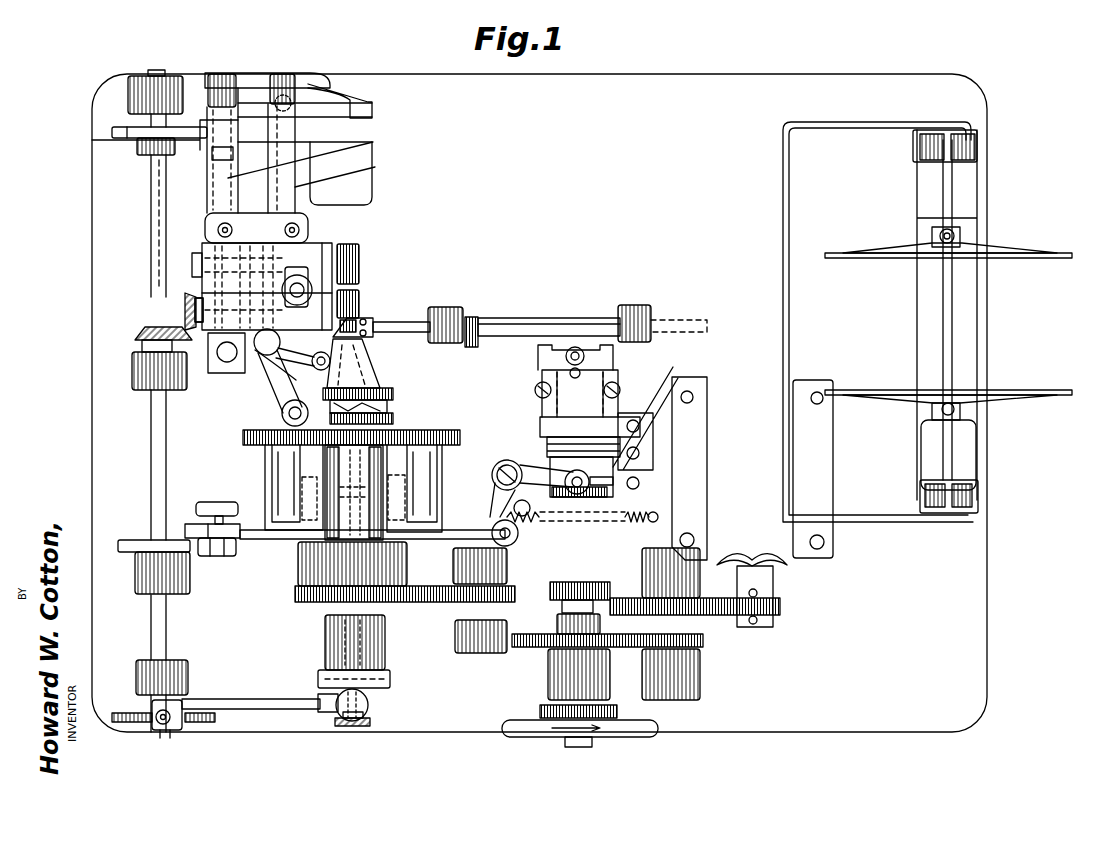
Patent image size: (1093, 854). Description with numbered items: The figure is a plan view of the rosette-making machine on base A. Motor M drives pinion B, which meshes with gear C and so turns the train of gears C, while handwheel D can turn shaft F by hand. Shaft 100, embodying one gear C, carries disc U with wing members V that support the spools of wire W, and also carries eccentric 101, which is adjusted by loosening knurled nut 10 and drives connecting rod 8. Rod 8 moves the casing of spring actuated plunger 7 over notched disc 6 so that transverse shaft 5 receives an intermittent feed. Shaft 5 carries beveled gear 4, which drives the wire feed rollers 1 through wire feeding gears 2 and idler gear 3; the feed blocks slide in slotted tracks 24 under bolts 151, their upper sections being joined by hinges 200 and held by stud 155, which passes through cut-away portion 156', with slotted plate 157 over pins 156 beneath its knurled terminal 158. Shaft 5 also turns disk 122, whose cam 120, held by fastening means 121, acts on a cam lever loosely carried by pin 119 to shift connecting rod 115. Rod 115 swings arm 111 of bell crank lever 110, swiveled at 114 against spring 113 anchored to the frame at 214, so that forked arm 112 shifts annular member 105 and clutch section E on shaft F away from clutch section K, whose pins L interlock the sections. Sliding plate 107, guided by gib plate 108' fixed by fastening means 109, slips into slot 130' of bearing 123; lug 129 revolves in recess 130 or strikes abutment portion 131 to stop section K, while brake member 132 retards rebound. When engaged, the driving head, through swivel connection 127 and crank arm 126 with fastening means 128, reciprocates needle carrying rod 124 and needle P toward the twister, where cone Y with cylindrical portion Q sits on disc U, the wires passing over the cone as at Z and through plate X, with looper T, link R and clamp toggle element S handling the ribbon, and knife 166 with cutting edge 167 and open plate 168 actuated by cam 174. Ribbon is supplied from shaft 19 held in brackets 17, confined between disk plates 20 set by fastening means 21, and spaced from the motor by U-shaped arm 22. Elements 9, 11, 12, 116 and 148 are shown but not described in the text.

The wire feed roller 1 is at (375, 250).
The wire feeding gear 2 is at (868, 772).
The intermediate idler gear 3 is at (62, 93).
The beveled gear 4 is at (183, 300).
The transverse shaft 5 is at (150, 464).
The notched disc 6 is at (125, 713).
The spring actuated plunger 7 is at (180, 730).
The connecting rod 8 is at (256, 702).
The plate 9 is at (392, 679).
The knurled nut 10 is at (372, 723).
The passage 11 is at (322, 678).
The housing 12 is at (372, 150).
The vertical bracket 17 is at (975, 132).
The supply shaft 19 is at (955, 322).
The disk plate 20 is at (1060, 260).
The detachable fastening means 21 is at (960, 236).
The U-shaped arm 22 is at (782, 214).
The slotted track 24 is at (372, 118).
The shaft 100 is at (370, 632).
The eccentric 101 is at (370, 705).
The annular member 105 is at (680, 405).
The slidable plate 107 is at (690, 420).
The gib plate 108' is at (746, 469).
The fastening means 109 is at (622, 456).
The bell crank lever 110 is at (490, 484).
The bell crank arm 111 is at (498, 506).
The forked bell crank arm 112 is at (560, 470).
The yielding resistance spring 113 is at (644, 521).
The swivel 114 is at (545, 452).
The connecting rod 115 is at (448, 540).
The drum 116 is at (320, 560).
The pin 119 is at (222, 556).
The cam 120 is at (208, 556).
The fastening means 121 is at (198, 512).
The overlapped disk 122 is at (126, 540).
The bearing 123 is at (600, 380).
The needle carrying rod 124 is at (590, 320).
The crank arm 126 is at (506, 337).
The swivel connection 127 is at (552, 345).
The fastening means 128 is at (472, 318).
The lug 129 is at (548, 425).
The recess 130 is at (634, 400).
The slot 130' is at (551, 394).
The abutment portion 131 is at (614, 398).
The brake member 132 is at (620, 340).
The gear 148 is at (328, 285).
The adjustable bolt 151 is at (212, 220).
The stud 155 is at (362, 252).
The pin 156 is at (270, 328).
The cut-away portion 156' is at (407, 278).
The slotted plate 157 is at (322, 270).
The knurled terminal 158 is at (302, 276).
The knife 166 is at (365, 92).
The cutting edge 167 is at (380, 96).
The open plate 168 is at (378, 106).
The cam 174 is at (115, 133).
The hinge 200 is at (205, 250).
The frame anchorage 214 is at (654, 510).
The base A is at (950, 86).
The pinion B is at (780, 608).
The gear C is at (318, 604).
The handwheel D is at (628, 737).
The clutch section E is at (539, 449).
The shaft F is at (566, 506).
The clutch section K is at (615, 350).
The projecting lug L is at (556, 447).
The motor M is at (770, 562).
The needle P is at (370, 326).
The cylindrical portion Q is at (392, 398).
The link R is at (282, 406).
The clamp toggle element S is at (282, 382).
The looper T is at (362, 318).
The rotatable disk U is at (448, 430).
The wing arm V is at (270, 474).
The wire spool W is at (308, 500).
The plate X is at (370, 350).
The cone Y is at (382, 372).
The wire thread path Z is at (292, 374).